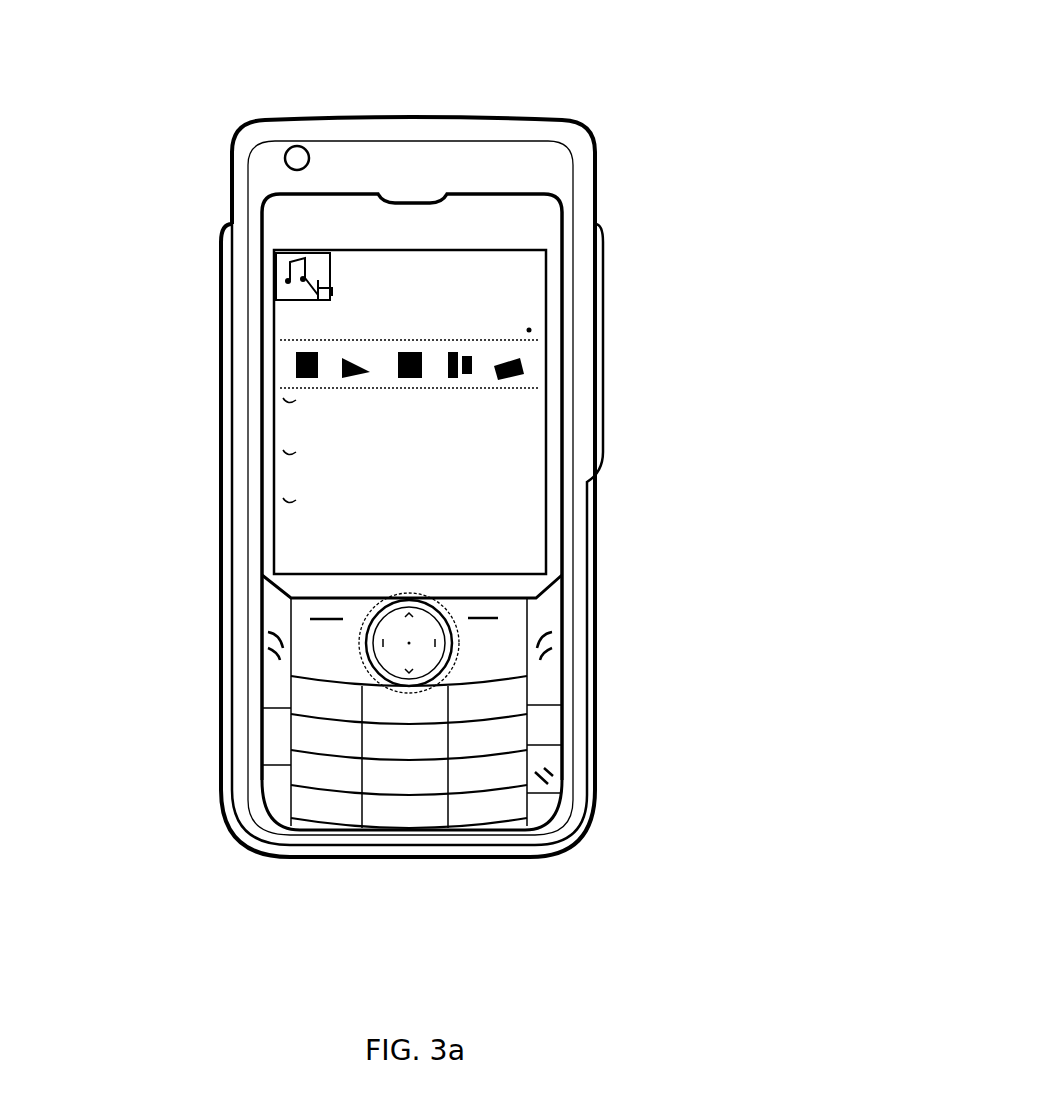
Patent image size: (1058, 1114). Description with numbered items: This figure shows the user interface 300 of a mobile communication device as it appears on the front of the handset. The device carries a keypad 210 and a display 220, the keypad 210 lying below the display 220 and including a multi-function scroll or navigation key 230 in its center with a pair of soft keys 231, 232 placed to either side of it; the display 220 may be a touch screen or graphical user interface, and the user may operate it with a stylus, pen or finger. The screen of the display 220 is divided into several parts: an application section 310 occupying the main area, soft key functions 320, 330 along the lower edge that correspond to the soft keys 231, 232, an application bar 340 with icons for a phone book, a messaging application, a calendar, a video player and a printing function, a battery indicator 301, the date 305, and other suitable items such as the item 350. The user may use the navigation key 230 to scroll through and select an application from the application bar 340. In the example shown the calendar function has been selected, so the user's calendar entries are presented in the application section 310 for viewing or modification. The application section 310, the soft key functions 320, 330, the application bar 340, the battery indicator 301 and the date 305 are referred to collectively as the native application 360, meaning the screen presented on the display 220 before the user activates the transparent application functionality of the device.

The keypad 210 is at (497, 816).
The display 220 is at (520, 258).
The multi-function/scroll key 230 is at (398, 655).
The soft key 231 is at (310, 622).
The soft key 232 is at (503, 622).
The user interface 300 is at (590, 330).
The battery indicator 301 is at (536, 300).
The date 305 is at (433, 300).
The application section 310 is at (508, 462).
The soft key function 320 is at (546, 557).
The soft key function 330 is at (274, 552).
The application bar 340 is at (296, 362).
The application icon 350 is at (272, 265).
The native application 360 is at (518, 435).